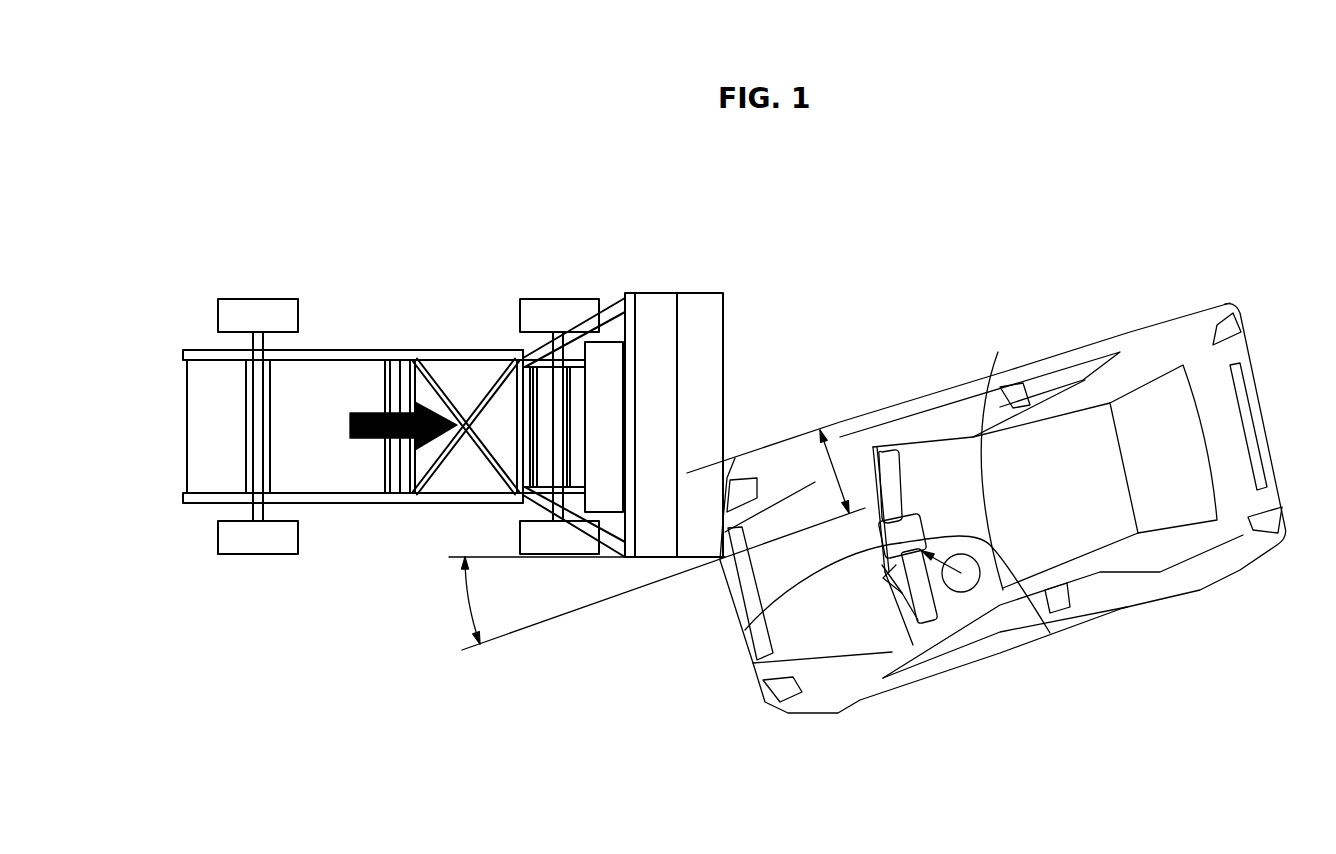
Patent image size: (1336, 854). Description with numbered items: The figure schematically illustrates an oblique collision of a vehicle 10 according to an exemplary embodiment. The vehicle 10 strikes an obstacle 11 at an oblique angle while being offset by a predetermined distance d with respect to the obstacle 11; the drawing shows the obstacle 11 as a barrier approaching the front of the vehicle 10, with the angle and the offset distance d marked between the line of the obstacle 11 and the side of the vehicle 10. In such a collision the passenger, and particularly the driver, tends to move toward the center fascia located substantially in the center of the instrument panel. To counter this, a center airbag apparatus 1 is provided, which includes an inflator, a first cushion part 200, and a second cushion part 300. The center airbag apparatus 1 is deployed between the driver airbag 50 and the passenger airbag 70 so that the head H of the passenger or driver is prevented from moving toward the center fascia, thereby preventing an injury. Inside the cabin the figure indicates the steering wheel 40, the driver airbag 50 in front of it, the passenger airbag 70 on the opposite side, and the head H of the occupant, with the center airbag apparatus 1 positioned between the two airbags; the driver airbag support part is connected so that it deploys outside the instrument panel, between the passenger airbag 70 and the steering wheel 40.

The obstacle 11 is at (695, 272).
The vehicle 10 is at (1170, 298).
The center airbag apparatus 1 is at (942, 507).
The passenger airbag 70 is at (890, 462).
The driver airbag 50 is at (927, 620).
The steering wheel 40 is at (900, 598).
The head H is at (965, 582).
The first cushion part 200 is at (745, 630).
The second cushion part 300 is at (1050, 633).
The predetermined distance d is at (838, 470).